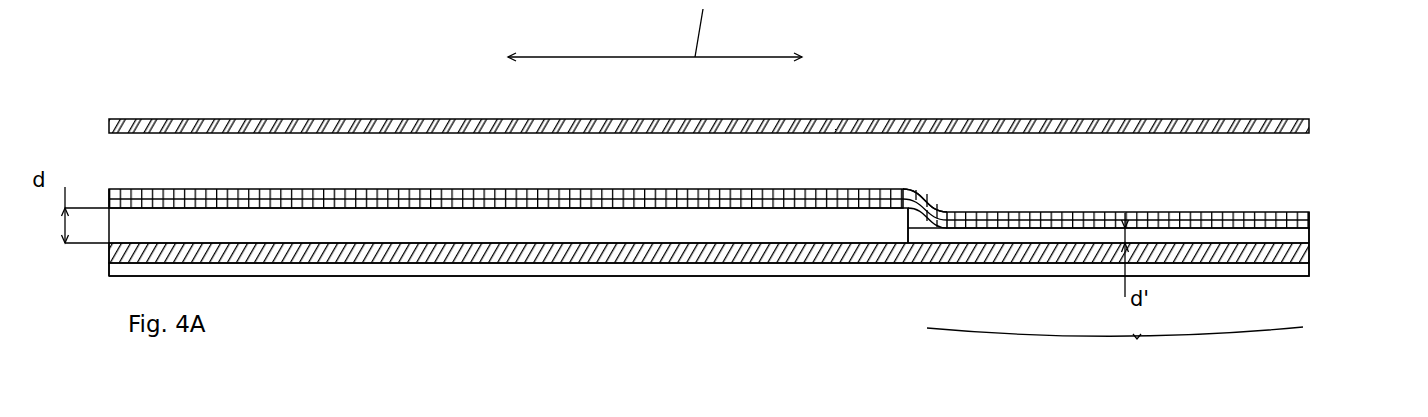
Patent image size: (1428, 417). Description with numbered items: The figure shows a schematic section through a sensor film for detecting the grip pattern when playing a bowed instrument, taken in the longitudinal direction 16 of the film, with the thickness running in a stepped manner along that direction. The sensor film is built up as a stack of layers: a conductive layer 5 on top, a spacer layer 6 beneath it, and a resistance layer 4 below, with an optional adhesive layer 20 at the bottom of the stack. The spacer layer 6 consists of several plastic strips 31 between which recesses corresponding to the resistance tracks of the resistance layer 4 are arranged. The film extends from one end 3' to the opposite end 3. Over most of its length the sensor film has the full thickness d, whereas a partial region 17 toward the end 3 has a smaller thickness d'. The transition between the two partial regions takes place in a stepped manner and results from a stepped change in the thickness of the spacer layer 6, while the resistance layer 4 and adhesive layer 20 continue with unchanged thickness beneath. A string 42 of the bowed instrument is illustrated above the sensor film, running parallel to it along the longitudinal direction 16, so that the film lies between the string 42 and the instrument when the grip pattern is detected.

The string 42 is at (1297, 118).
The conductive layer 5 is at (1307, 220).
The spacer layer 6 is at (1305, 236).
The resistance layer 4 is at (1307, 258).
The adhesive layer 20 is at (1298, 269).
The end 3 is at (731, 275).
The end 3' is at (85, 252).
The plastic strips 31 is at (882, 222).
The partial region 17 is at (1135, 347).
The longitudinal direction 16 is at (721, 416).